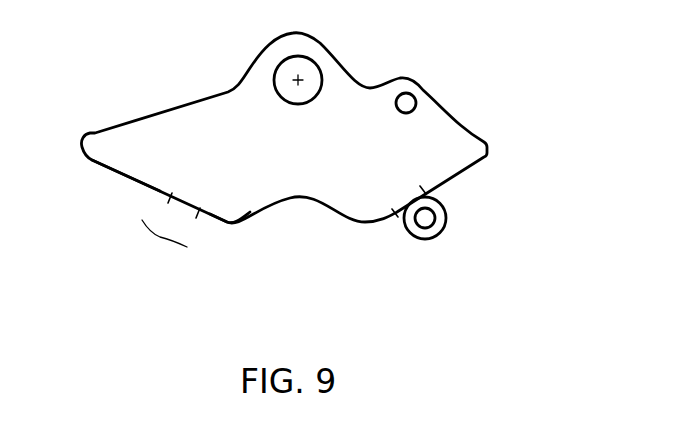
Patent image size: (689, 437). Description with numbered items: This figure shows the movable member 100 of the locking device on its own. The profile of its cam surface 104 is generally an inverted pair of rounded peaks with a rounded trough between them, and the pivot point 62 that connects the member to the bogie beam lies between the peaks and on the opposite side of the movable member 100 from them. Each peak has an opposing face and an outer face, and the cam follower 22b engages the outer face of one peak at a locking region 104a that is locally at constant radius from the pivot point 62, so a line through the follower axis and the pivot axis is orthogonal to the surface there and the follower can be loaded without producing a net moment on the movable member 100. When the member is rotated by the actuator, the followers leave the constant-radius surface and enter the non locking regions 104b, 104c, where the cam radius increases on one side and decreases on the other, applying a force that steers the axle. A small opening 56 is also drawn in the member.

The movable member 100 is at (308, 151).
The cam surface 104 is at (291, 204).
The locking region 104a is at (160, 237).
The non locking region 104b is at (123, 177).
The non locking region 104c is at (227, 223).
The pivot point 62 is at (310, 70).
The pin opening 56 is at (405, 101).
The cam follower 22b is at (447, 223).